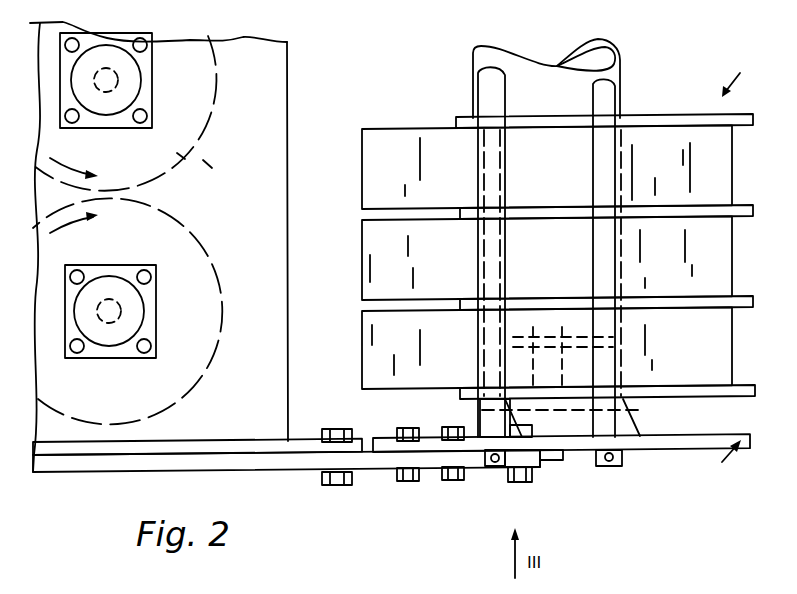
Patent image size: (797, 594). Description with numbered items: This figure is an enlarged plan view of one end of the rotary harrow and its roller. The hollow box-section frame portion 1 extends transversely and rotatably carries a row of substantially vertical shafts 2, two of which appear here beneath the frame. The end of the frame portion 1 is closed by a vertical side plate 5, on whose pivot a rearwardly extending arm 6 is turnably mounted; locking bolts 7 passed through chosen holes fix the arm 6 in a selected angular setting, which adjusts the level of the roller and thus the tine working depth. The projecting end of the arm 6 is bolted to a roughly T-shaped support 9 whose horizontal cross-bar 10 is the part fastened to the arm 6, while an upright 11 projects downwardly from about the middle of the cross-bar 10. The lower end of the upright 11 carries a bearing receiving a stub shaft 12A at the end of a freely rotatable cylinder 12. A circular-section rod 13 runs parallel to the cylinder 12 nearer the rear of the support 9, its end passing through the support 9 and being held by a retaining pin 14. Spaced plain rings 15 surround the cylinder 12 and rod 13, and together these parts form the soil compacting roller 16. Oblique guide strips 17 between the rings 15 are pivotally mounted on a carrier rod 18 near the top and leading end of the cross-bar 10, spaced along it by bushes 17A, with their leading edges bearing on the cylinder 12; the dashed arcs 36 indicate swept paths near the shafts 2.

The hollow box-section frame portion 1 is at (277, 120).
The non-horizontal shaft 2 is at (112, 78).
The side plate 5 is at (237, 452).
The arm 6 is at (300, 468).
The locking bolt 7 is at (338, 486).
The support 9 is at (721, 462).
The cross-bar 10 is at (691, 443).
The upright 11 is at (632, 422).
The cylinder 12 is at (473, 56).
The stub shaft 12A is at (548, 328).
The rod 13 is at (595, 96).
The retaining pin 14 is at (609, 466).
The plain ring 15 is at (368, 232).
The soil compacting roller 16 is at (732, 74).
The strip 17 is at (688, 118).
The spacing bush 17A is at (506, 187).
The carrier rod 18 is at (482, 74).
The swing path 36 is at (190, 192).